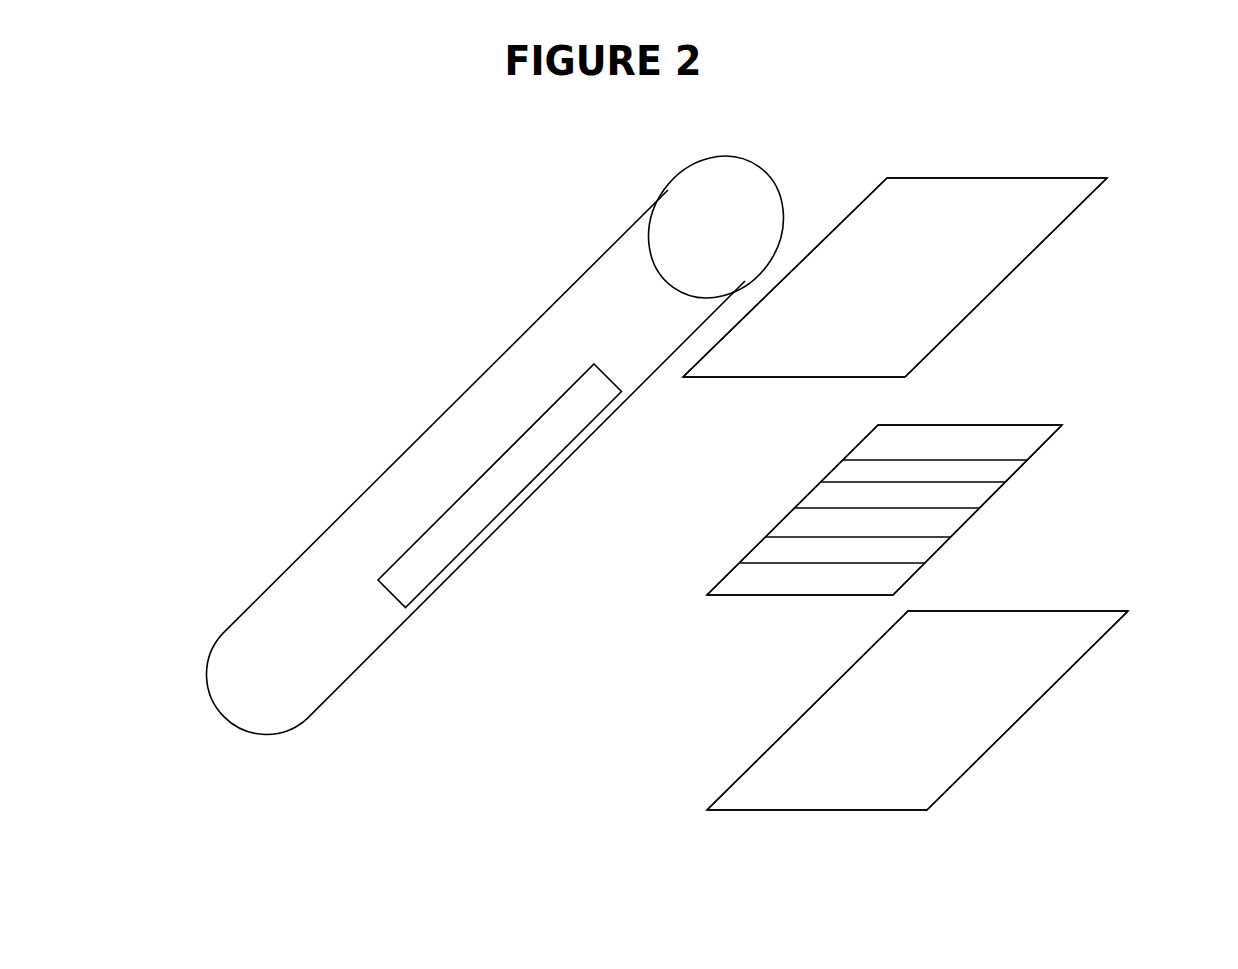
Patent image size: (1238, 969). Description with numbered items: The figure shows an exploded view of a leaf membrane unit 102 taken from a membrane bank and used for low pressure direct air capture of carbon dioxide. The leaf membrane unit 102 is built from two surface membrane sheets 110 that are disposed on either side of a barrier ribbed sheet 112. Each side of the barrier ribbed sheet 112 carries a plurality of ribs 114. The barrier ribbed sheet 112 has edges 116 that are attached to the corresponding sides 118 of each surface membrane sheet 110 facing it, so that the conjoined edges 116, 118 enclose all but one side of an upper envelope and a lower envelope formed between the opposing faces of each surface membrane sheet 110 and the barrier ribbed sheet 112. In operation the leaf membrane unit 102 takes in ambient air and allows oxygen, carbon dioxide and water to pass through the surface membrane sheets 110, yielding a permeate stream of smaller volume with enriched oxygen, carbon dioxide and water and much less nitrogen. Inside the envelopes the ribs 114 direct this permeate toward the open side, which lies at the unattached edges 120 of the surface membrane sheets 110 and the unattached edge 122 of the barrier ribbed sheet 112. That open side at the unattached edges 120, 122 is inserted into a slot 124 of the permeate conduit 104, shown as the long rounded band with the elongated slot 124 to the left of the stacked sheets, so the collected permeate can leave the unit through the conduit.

The leaf membrane unit 102 is at (508, 433).
The permeate conduit 104 is at (328, 672).
The surface membrane sheets 110 is at (936, 134).
The barrier ribbed sheet 112 is at (919, 510).
The ribs 114 is at (1055, 459).
The edges of barrier ribbed sheet 116 is at (988, 416).
The sides of surface membrane sheet 118 is at (992, 163).
The unattached edges of surface membrane sheets 120 is at (838, 210).
The unattached edge of barrier ribbed sheet 122 is at (695, 575).
The slot 124 is at (457, 542).